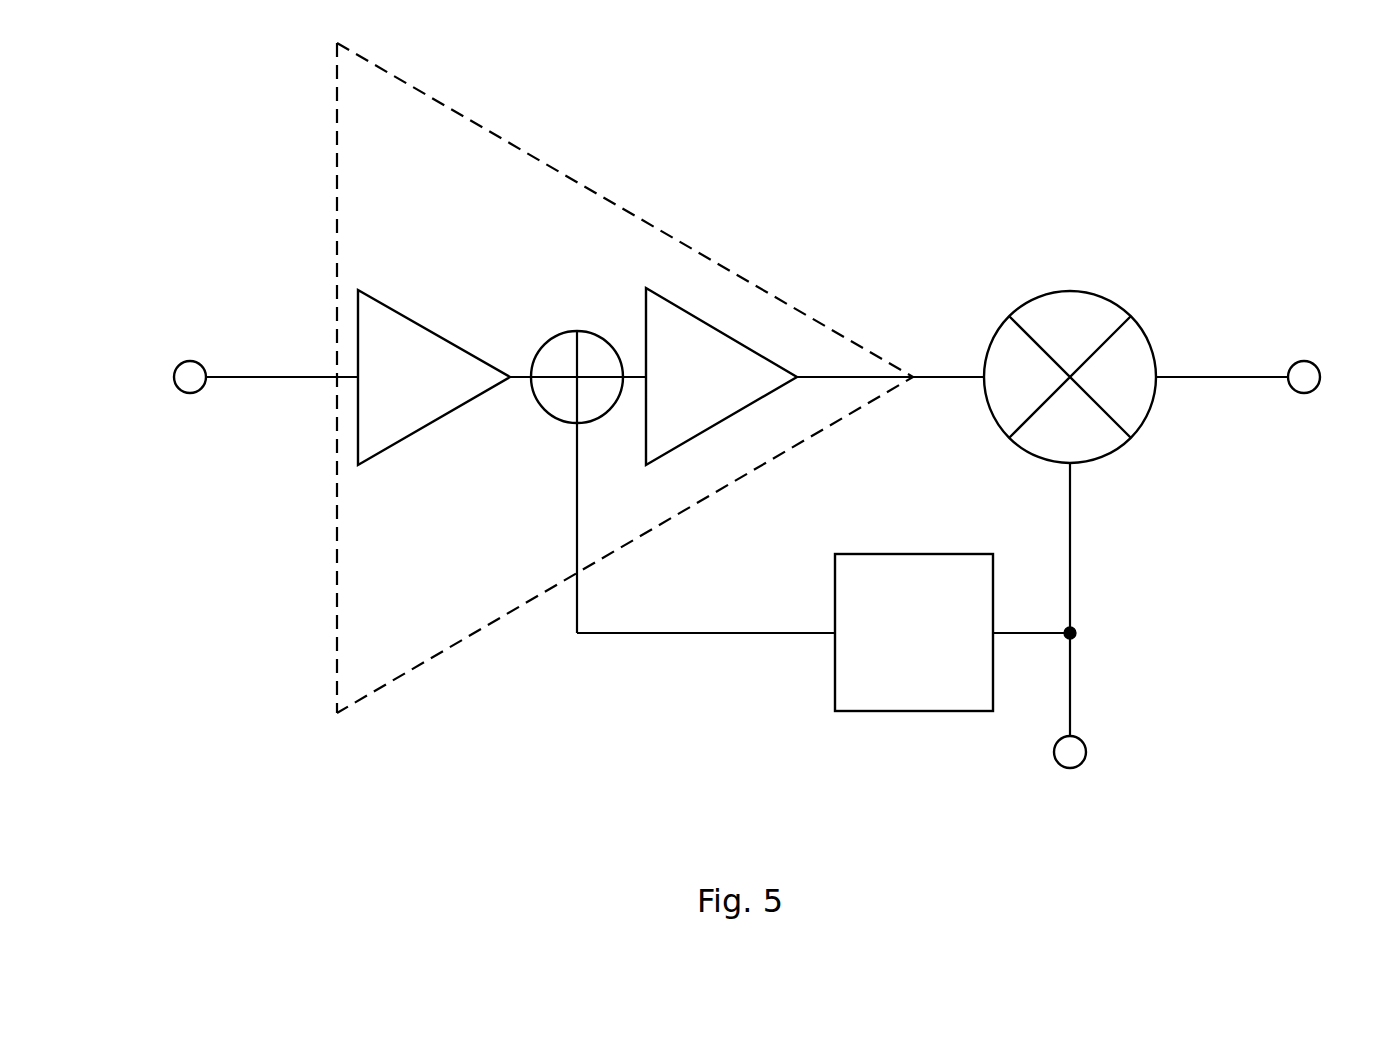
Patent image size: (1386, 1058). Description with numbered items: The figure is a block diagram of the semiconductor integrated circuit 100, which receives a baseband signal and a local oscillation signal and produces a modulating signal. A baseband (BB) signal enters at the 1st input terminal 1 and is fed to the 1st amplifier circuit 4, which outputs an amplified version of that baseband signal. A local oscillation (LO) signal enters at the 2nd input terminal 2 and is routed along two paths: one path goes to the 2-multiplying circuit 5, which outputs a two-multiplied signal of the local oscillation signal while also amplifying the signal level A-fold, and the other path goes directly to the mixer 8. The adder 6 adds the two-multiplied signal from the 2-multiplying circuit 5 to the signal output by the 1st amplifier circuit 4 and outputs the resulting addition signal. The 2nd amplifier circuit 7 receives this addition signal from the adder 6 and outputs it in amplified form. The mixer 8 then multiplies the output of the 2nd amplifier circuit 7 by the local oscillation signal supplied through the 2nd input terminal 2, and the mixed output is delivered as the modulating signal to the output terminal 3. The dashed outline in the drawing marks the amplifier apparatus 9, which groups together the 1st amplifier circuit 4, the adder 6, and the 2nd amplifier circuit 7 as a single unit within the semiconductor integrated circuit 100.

The 1st input terminal 1 is at (174, 377).
The 2nd input terminal 2 is at (1086, 752).
The output terminal 3 is at (1320, 377).
The 1st amplifier circuit 4 is at (437, 332).
The 2-multiplying circuit 5 is at (917, 554).
The adder 6 is at (578, 331).
The 2nd amplifier circuit 7 is at (725, 330).
The mixer 8 is at (1071, 291).
The amplifier apparatus 9 is at (626, 211).
The semiconductor integrated circuit 100 is at (760, 818).